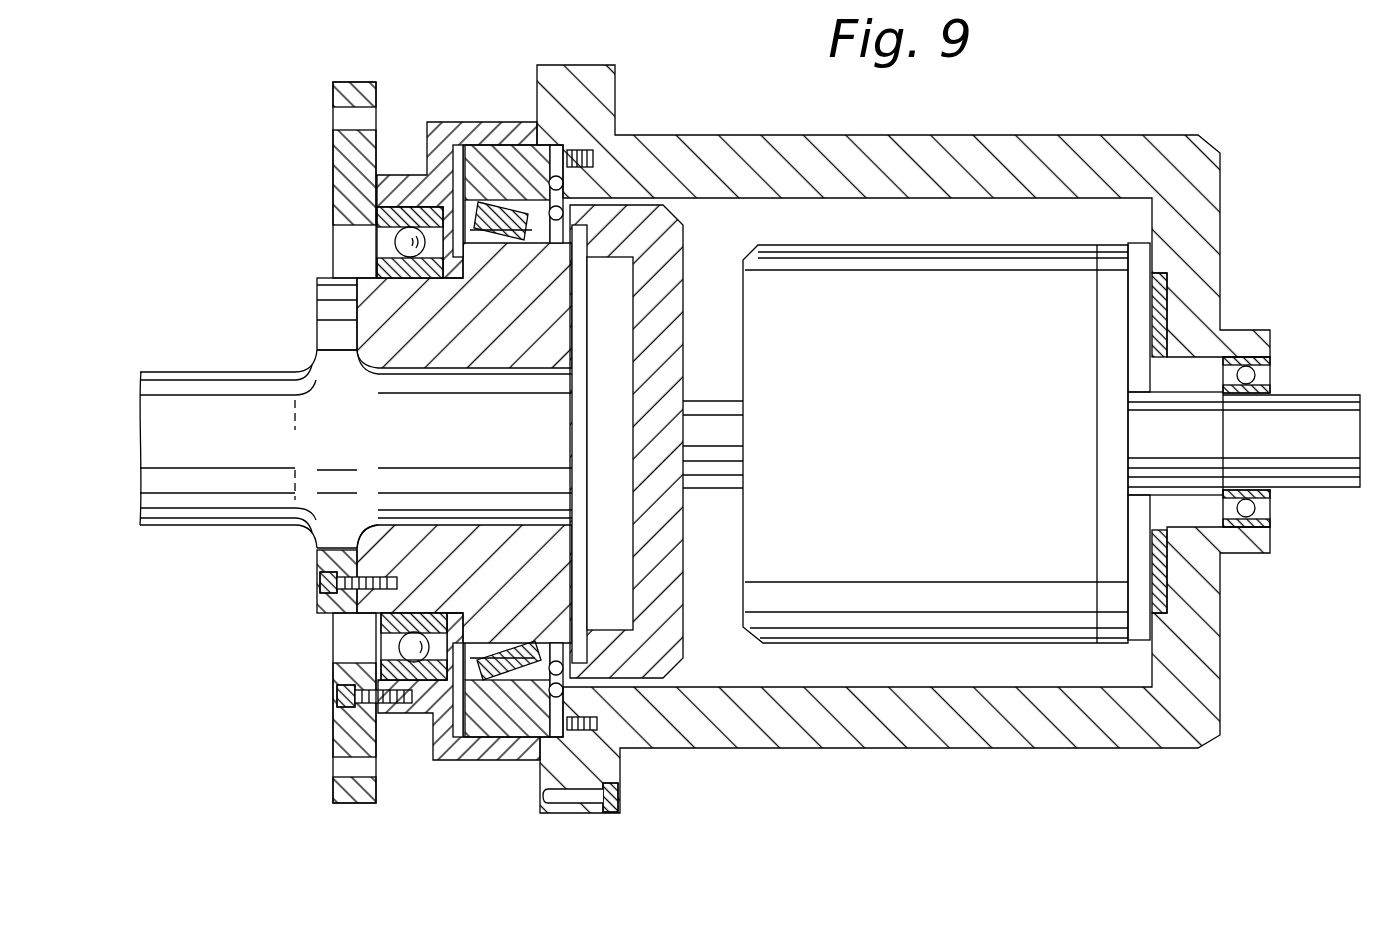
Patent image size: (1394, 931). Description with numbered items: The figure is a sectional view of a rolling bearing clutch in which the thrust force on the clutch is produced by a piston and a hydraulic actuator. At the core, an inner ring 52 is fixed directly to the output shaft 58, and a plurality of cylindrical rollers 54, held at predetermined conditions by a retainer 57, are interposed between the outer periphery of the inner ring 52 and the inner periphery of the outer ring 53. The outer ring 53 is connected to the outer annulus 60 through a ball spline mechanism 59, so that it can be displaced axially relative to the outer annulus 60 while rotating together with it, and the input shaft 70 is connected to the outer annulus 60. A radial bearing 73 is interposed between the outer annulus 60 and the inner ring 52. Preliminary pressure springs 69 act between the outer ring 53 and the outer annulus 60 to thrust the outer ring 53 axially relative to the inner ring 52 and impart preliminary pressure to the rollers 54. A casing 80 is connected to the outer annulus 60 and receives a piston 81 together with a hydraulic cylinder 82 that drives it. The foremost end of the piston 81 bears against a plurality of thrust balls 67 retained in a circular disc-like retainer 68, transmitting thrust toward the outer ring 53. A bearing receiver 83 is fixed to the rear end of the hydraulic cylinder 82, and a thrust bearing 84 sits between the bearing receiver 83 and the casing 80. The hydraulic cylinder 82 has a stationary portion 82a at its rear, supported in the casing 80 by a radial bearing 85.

The inner ring 52 is at (365, 610).
The outer ring 53 is at (503, 152).
The cylindrical rollers 54 is at (487, 732).
The retainer 57 is at (432, 705).
The output shaft 58 is at (247, 388).
The ball spline mechanism 59 is at (557, 176).
The outer annulus 60 is at (440, 128).
The thrust balls 67 is at (572, 676).
The retainer 68 is at (543, 662).
The preliminary pressure springs 69 is at (600, 725).
The input shaft 70 is at (333, 92).
The radial bearing 73 is at (404, 203).
The casing 80 is at (1176, 150).
The piston 81 is at (628, 215).
The hydraulic cylinder 82 is at (772, 283).
The stationary portion 82a is at (1312, 460).
The bearing receiver 83 is at (1137, 260).
The thrust bearing 84 is at (1162, 292).
The radial bearing 85 is at (1254, 545).